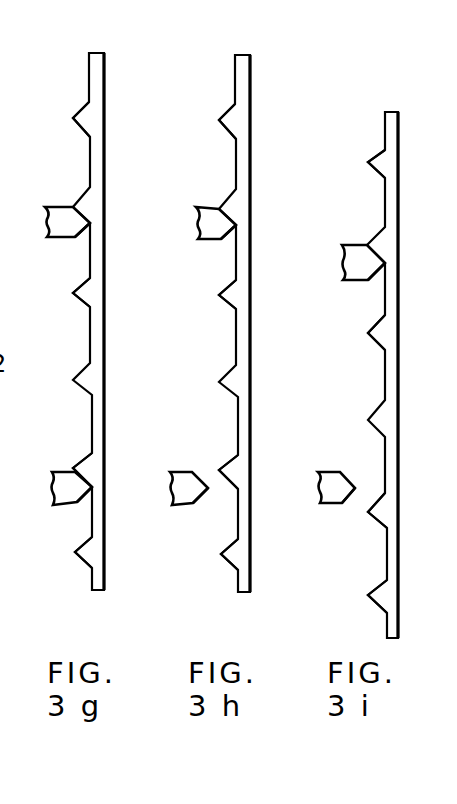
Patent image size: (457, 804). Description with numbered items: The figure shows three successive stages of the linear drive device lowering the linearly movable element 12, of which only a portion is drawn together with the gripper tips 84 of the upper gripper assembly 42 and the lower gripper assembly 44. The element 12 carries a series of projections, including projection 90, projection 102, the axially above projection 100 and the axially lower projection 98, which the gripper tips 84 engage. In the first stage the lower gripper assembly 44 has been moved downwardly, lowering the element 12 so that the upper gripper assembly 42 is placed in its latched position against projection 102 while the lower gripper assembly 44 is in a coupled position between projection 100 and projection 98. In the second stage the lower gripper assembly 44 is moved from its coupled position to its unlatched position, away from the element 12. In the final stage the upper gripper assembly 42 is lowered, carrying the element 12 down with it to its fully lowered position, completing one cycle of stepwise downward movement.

In FIG. 3g, the linearly movable element 12 is at (105, 378).
In FIG. 3h, the linearly movable element 12 is at (251, 379).
In FIG. 3i, the linearly movable element 12 is at (399, 390).
In FIG. 3g, the projection 90 is at (87, 101).
In FIG. 3h, the projection 90 is at (233, 102).
In FIG. 3i, the projection 90 is at (379, 152).
In FIG. 3g, the upper gripper assembly 42 is at (45, 231).
In FIG. 3h, the upper gripper assembly 42 is at (194, 232).
In FIG. 3i, the upper gripper assembly 42 is at (363, 246).
In FIG. 3g, the gripper tip 84 is at (85, 242).
In FIG. 3h, the gripper tip 84 is at (231, 244).
In FIG. 3i, the gripper tip 84 is at (377, 280).
In FIG. 3g, the projection 102 is at (86, 308).
In FIG. 3h, the projection 102 is at (233, 310).
In FIG. 3i, the projection 102 is at (383, 352).
In FIG. 3g, the axially above projection 100 is at (90, 455).
In FIG. 3h, the axially above projection 100 is at (237, 457).
In FIG. 3i, the axially above projection 100 is at (384, 494).
In FIG. 3g, the lower gripper assembly 44 is at (60, 510).
In FIG. 3h, the lower gripper assembly 44 is at (190, 508).
In FIG. 3i, the lower gripper assembly 44 is at (316, 498).
In FIG. 3g, the axially lower projection 98 is at (78, 565).
In FIG. 3h, the axially lower projection 98 is at (232, 564).
In FIG. 3i, the axially lower projection 98 is at (372, 604).